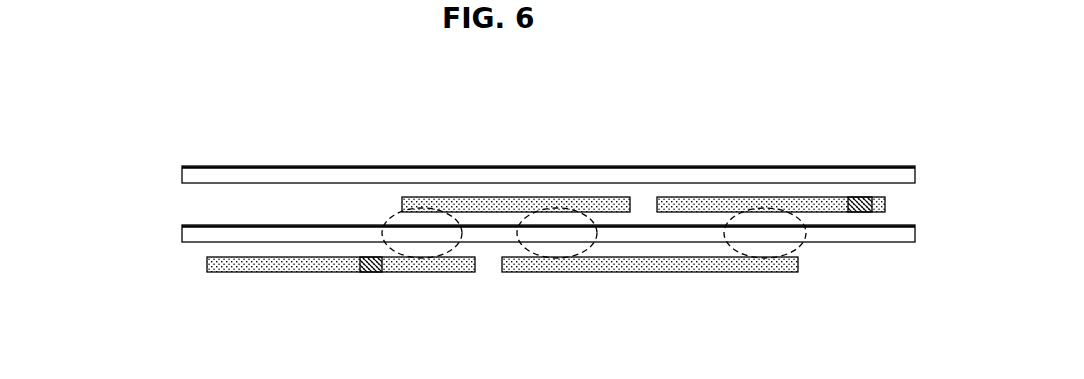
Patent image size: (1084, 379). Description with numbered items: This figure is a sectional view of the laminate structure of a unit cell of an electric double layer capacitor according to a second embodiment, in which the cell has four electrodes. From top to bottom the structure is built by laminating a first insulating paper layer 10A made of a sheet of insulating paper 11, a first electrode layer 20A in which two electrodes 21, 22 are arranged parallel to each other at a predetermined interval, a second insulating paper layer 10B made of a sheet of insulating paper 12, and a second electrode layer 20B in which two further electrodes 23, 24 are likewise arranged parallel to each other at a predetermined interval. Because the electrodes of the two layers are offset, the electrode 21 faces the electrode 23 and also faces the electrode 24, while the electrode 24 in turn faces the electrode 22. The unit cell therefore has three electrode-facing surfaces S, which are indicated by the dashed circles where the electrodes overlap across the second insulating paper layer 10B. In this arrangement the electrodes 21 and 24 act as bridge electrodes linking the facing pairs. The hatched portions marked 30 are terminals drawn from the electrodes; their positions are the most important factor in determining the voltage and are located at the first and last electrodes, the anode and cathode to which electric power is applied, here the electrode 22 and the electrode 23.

The first insulating paper layer 10A is at (168, 173).
The second insulating paper layer 10B is at (168, 233).
The insulating paper 11 is at (298, 172).
The insulating paper 12 is at (855, 237).
The first electrode layer 20A is at (168, 203).
The second electrode layer 20B is at (168, 263).
The electrode 21 is at (470, 197).
The electrode 22 is at (796, 210).
The electrode 23 is at (285, 273).
The electrode 24 is at (688, 273).
The terminal 30 is at (850, 208).
The electrode-facing surface S is at (398, 209).